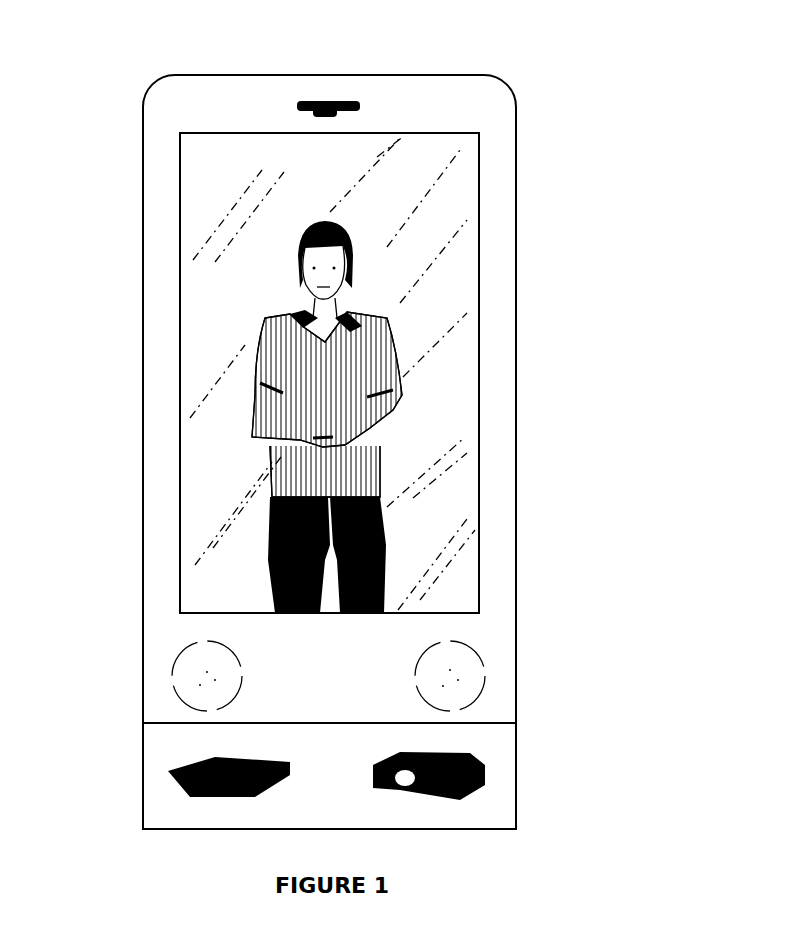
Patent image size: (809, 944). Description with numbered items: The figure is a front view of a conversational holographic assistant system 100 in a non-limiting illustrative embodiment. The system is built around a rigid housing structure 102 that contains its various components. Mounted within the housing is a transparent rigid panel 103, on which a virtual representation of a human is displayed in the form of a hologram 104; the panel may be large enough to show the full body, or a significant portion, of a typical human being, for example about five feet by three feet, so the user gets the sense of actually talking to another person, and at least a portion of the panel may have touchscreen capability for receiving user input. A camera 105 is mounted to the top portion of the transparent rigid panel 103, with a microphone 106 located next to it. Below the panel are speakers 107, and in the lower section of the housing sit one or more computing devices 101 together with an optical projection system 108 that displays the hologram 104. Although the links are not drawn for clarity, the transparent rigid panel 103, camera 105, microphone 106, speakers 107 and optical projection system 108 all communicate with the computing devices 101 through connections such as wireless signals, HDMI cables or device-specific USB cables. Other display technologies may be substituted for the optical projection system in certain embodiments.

The conversational holographic assistant system 100 is at (690, 46).
The computing devices 101 is at (163, 762).
The rigid housing structure 102 is at (522, 136).
The transparent rigid panel 103 is at (200, 185).
The hologram 104 is at (348, 220).
The camera 105 is at (293, 100).
The microphone 106 is at (345, 121).
The speakers 107 is at (175, 650).
The optical projection system 108 is at (488, 745).